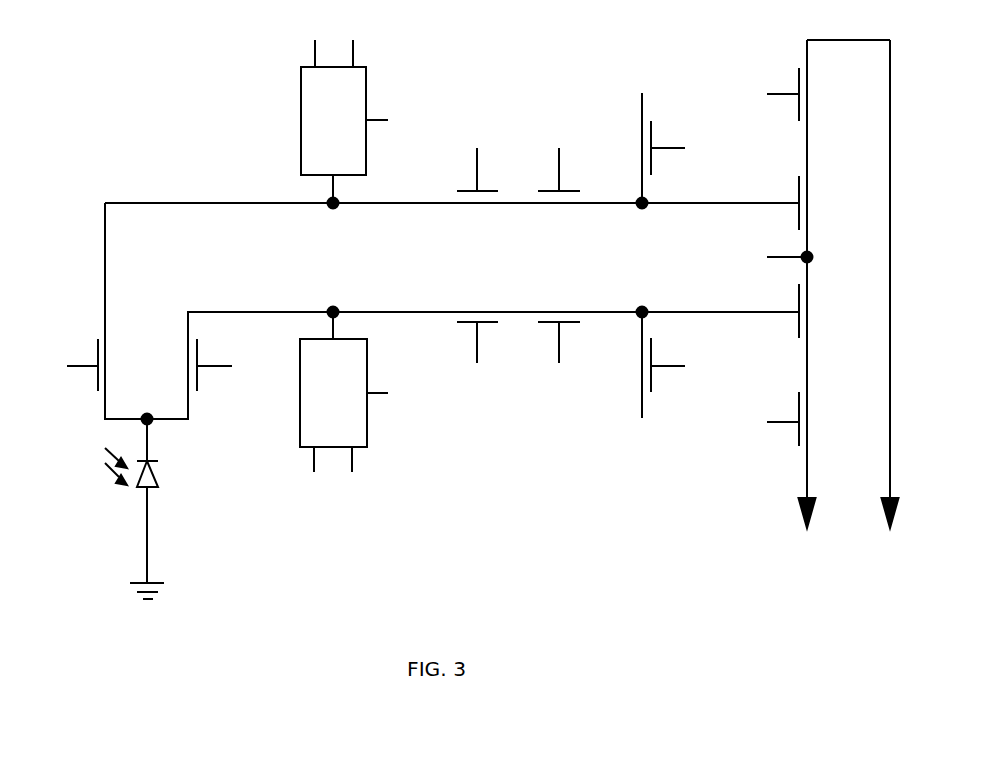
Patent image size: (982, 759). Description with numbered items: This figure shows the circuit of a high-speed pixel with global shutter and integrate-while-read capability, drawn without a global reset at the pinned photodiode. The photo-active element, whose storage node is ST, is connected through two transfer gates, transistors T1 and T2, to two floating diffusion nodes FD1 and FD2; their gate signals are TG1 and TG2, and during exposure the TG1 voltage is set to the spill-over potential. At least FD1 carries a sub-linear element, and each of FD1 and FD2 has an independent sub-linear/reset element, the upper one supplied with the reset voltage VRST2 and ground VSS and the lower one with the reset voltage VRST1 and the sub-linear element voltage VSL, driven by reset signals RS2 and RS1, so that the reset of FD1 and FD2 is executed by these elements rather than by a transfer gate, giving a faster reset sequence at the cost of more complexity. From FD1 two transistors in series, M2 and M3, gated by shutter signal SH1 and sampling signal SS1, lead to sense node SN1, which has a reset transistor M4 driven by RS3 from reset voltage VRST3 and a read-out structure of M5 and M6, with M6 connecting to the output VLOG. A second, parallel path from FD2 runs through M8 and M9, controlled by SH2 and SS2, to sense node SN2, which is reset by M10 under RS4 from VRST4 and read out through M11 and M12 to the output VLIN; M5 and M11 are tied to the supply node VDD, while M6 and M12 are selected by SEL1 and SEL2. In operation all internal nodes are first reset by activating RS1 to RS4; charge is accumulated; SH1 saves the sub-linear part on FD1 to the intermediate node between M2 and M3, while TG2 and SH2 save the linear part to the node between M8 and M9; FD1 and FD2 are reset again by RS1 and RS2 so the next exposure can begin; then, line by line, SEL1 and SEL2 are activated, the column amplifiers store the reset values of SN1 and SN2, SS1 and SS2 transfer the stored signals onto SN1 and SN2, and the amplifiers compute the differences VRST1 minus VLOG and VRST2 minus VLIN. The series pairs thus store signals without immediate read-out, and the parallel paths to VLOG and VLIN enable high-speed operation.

The transfer gate T1 is at (177, 365).
The transfer gate T2 is at (117, 365).
The transfer gate signal TG1 is at (231, 369).
The transfer gate signal TG2 is at (62, 369).
The pinned photodiode storage node ST is at (145, 507).
The floating diffusion FD1 is at (332, 300).
The floating diffusion FD2 is at (331, 217).
The reset signal RS1 is at (396, 392).
The reset signal RS2 is at (395, 120).
The reset signal RS3 is at (685, 365).
The reset signal RS4 is at (685, 147).
The reset voltage VRST1 is at (292, 477).
The reset voltage VRST2 is at (296, 38).
The reset voltage VRST3 is at (641, 421).
The reset voltage VRST4 is at (642, 94).
The sub-linear element voltage VSL is at (362, 477).
The ground voltage VSS is at (362, 38).
The supply voltage VDD is at (767, 257).
The transistor M2 is at (477, 323).
The transistor M3 is at (559, 323).
The reset transistor M4 is at (630, 365).
The read-out transistor M5 is at (818, 311).
The read-out transistor M6 is at (818, 419).
The transistor M8 is at (477, 190).
The transistor M9 is at (559, 190).
The reset transistor M10 is at (628, 148).
The read-out transistor M11 is at (823, 203).
The read-out transistor M12 is at (824, 94).
The shutter signal SH1 is at (477, 366).
The shutter signal SH2 is at (477, 146).
The sampling signal SS1 is at (560, 366).
The sampling signal SS2 is at (560, 146).
The sense node SN1 is at (642, 348).
The sense node SN2 is at (642, 165).
The pixel select signal SEL1 is at (761, 421).
The pixel select signal SEL2 is at (761, 94).
The output VLOG is at (807, 299).
The output VLIN is at (890, 299).